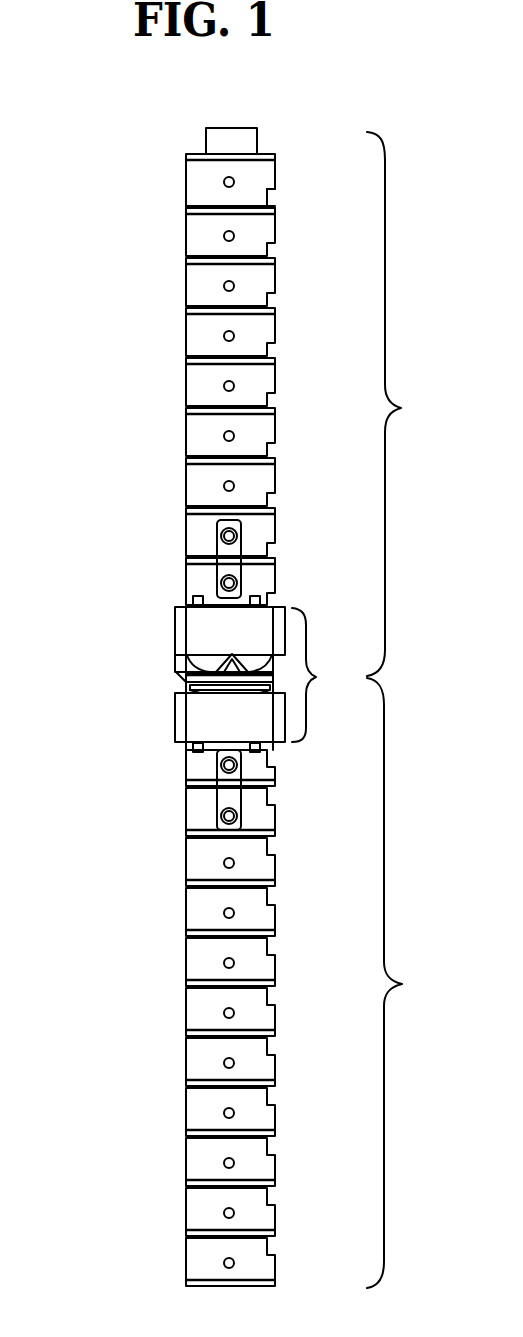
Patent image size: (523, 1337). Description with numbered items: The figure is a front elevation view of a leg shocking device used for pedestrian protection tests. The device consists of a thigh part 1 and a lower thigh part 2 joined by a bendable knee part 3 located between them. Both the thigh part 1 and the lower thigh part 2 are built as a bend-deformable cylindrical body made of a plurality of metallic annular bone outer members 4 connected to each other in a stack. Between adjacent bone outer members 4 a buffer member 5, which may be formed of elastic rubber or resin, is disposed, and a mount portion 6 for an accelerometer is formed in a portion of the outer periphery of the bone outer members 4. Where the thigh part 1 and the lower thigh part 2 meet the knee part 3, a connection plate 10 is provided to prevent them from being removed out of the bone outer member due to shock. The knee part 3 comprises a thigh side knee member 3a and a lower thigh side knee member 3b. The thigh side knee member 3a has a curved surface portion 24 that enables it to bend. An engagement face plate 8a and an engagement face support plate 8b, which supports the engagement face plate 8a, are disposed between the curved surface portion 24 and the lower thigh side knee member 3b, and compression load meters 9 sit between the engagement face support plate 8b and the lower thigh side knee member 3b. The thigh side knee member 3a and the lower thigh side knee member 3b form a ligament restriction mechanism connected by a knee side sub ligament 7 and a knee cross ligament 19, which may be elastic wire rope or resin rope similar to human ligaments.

The thigh part 1 is at (279, 396).
The lower thigh part 2 is at (253, 983).
The knee part 3 is at (200, 679).
The thigh side knee member 3a is at (203, 632).
The lower thigh side knee member 3b is at (208, 722).
The bone outer member 4 is at (202, 178).
The buffer member 5 is at (187, 207).
The mount portion 6 is at (275, 198).
The knee side sub ligament 7 is at (180, 679).
The engagement face plate 8a is at (180, 673).
The engagement face support plate 8b is at (180, 688).
The compression load meter 9 is at (253, 688).
The connection plate 10 is at (225, 798).
The knee cross ligament 19 is at (243, 658).
The curved surface portion 24 is at (197, 662).